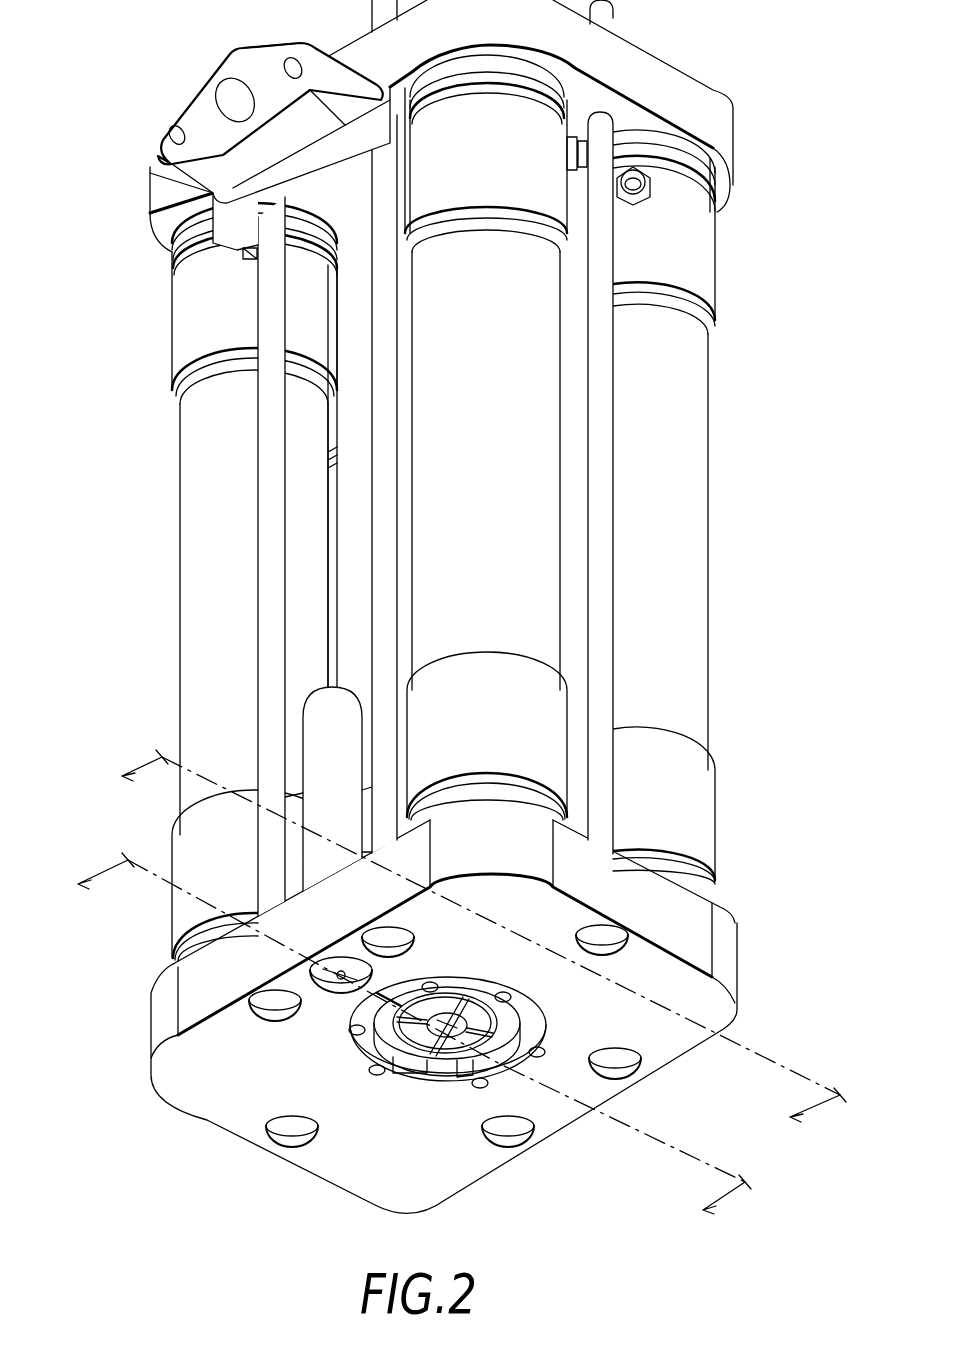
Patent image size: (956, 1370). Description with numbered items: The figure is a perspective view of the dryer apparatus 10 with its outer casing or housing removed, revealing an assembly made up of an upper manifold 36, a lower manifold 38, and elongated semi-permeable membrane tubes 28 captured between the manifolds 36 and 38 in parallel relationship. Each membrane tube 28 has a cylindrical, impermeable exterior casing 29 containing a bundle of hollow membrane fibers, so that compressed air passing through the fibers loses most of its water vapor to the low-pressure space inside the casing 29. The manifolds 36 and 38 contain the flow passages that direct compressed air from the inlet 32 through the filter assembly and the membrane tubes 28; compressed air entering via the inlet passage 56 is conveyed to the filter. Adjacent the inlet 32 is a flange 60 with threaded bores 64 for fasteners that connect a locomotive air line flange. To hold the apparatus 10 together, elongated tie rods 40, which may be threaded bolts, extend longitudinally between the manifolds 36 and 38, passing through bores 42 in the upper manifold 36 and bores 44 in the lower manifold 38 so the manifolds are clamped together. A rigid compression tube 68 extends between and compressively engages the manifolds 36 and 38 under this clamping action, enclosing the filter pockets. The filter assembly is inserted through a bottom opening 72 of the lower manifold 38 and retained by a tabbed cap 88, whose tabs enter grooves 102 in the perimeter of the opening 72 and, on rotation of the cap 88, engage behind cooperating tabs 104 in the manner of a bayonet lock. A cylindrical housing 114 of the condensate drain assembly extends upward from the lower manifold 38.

The dryer apparatus 10 is at (444, 620).
The membrane tubes 28 is at (510, 490).
The exterior casing 29 is at (184, 444).
The inlet 32 is at (233, 67).
The upper manifold 36 is at (680, 84).
The lower manifold 38 is at (732, 950).
The tie rods 40 is at (380, 577).
The bores 42 is at (610, 118).
The bores 44 is at (630, 1068).
The inlet passage 56 is at (226, 97).
The flange 60 is at (263, 48).
The bores 64 is at (291, 62).
The compression tube 68 is at (347, 493).
The bottom opening 72 is at (458, 1073).
The tabbed cap 88 is at (417, 1045).
The grooves 102 is at (445, 1071).
The tabs 104 is at (377, 1023).
The cylindrical housing 114 is at (320, 730).